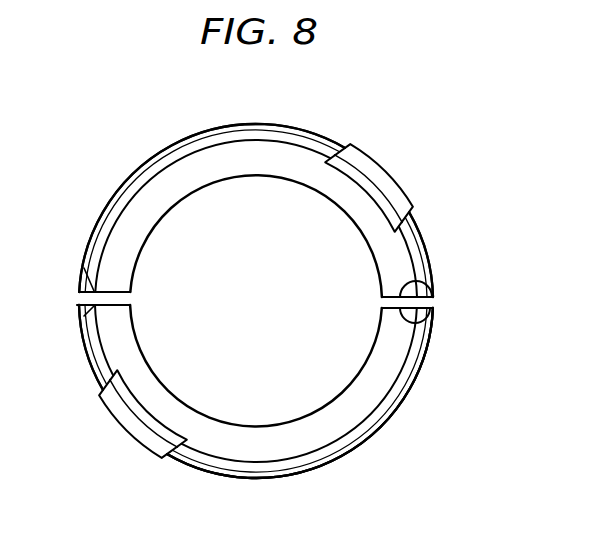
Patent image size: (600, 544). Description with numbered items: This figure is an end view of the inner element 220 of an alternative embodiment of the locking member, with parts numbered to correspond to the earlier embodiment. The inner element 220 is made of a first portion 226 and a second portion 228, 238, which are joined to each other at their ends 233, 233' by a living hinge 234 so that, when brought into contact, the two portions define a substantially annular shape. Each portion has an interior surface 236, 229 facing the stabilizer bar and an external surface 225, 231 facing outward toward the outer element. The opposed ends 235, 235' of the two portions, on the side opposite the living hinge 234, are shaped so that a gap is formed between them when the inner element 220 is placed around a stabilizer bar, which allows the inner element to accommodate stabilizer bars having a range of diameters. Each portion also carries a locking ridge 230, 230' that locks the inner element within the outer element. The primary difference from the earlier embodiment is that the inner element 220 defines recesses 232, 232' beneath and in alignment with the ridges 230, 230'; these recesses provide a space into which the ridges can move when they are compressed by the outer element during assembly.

The inner element 220 is at (263, 100).
The external surface 225 is at (232, 122).
The first portion 226 is at (175, 126).
The second portion 228 is at (352, 472).
The interior surface 229 is at (266, 430).
The locking ridge 230 is at (369, 165).
The locking ridge 230' is at (112, 414).
The external surface 231 is at (424, 376).
The recess 232 is at (349, 151).
The recess 232' is at (108, 394).
The end 233 is at (438, 265).
The end 233' is at (440, 322).
The living hinge 234 is at (427, 301).
The opposed end 235 is at (63, 258).
The opposed end 235' is at (60, 312).
The interior surface 236 is at (138, 291).
The second portion 238 is at (138, 305).